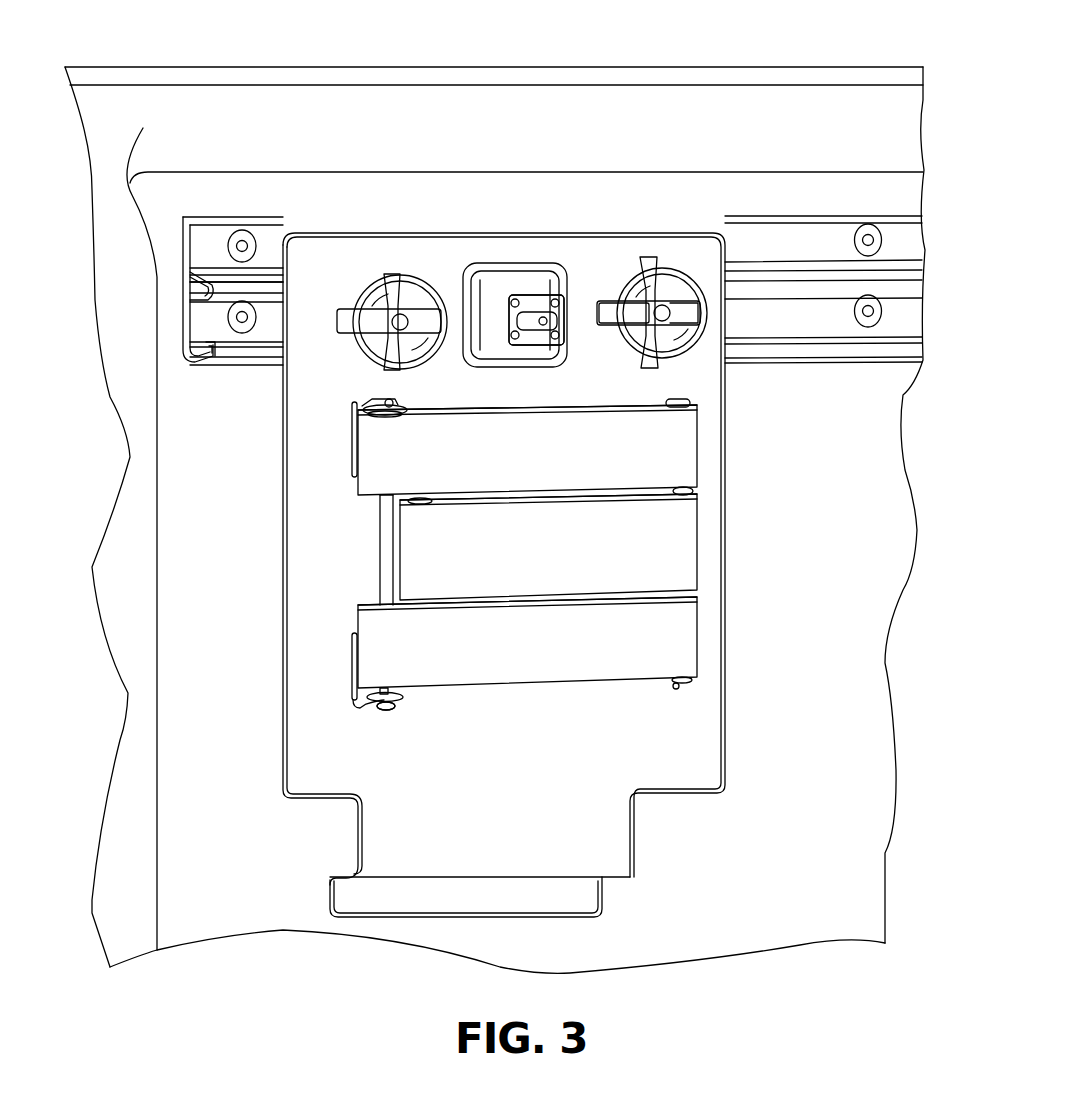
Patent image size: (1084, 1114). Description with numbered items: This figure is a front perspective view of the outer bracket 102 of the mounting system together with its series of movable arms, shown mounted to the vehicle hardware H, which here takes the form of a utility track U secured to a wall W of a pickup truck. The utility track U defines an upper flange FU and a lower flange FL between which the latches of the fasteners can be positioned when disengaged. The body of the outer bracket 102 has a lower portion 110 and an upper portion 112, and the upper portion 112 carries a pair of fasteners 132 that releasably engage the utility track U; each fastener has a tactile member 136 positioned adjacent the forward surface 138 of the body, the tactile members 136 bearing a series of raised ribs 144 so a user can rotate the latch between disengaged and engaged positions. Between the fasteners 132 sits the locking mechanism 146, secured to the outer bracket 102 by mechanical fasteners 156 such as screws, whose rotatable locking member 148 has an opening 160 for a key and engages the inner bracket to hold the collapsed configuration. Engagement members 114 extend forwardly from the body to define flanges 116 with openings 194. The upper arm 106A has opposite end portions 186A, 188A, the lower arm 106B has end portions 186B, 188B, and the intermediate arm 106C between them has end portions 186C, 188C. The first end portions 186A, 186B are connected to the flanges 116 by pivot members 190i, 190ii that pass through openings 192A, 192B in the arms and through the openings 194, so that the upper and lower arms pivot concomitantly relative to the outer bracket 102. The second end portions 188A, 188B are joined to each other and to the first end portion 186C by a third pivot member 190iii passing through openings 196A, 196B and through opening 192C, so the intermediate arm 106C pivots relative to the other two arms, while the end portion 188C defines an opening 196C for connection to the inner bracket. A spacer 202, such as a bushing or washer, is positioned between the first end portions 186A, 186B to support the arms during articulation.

The hardware H is at (237, 208).
The utility track U is at (271, 235).
The wall W is at (898, 555).
The upper flange FU is at (215, 300).
The lower flange FL is at (237, 365).
The outer bracket 102 is at (328, 252).
The lower portion 110 is at (653, 850).
The upper portion 112 is at (688, 238).
The fasteners 132 is at (413, 255).
The tactile member 136 is at (425, 282).
The forward surface 138 is at (655, 232).
The raised ribs 144 is at (363, 318).
The locking mechanism 146 is at (525, 240).
The locking member 148 is at (542, 326).
The mechanical fasteners 156 is at (517, 303).
The opening 160 is at (553, 338).
The engagement members 114 is at (408, 382).
The flanges 116 is at (350, 410).
The openings 194 is at (395, 406).
The first pivot member 190i is at (362, 404).
The second pivot member 190ii is at (387, 710).
The third pivot member 190iii is at (678, 690).
The first end portion of upper arm 186A is at (380, 455).
The second end portion of upper arm 188A is at (683, 442).
The upper arm 106A is at (640, 423).
The opening 196A is at (692, 407).
The first end portion of intermediate arm 186C is at (688, 548).
The second end portion of intermediate arm 188C is at (408, 548).
The opening 196C is at (420, 500).
The opening 192C is at (681, 488).
The intermediate arm 106C is at (582, 574).
The spacer 202 is at (385, 542).
The opening 192A is at (383, 498).
The opening 192B is at (382, 600).
The first end portion of lower arm 186B is at (380, 658).
The second end portion of lower arm 188B is at (690, 632).
The lower arm 106B is at (491, 672).
The opening 196B is at (684, 684).